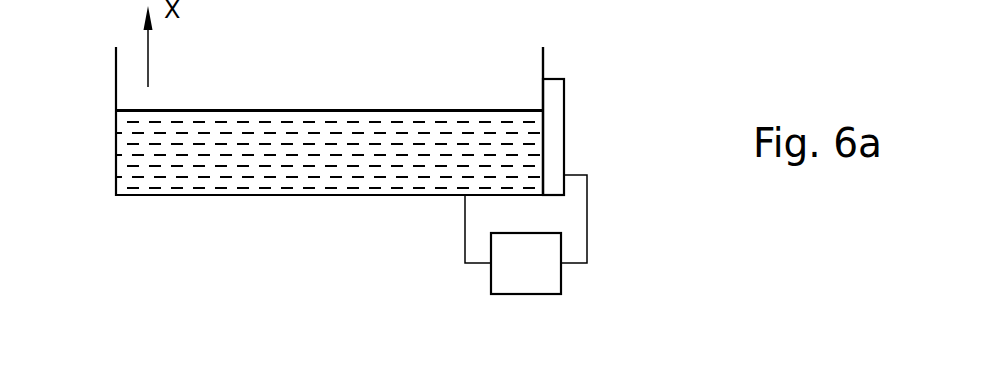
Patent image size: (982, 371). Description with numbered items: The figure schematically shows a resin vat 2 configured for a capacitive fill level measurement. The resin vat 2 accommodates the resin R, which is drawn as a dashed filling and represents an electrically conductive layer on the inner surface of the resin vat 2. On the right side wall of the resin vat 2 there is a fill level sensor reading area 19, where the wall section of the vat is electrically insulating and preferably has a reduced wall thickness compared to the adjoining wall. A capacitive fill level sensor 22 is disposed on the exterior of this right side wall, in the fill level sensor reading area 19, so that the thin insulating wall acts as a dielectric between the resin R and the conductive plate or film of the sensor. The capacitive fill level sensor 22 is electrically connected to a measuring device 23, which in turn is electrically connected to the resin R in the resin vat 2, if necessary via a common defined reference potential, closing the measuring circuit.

The resin vat 2 is at (116, 80).
The resin R is at (162, 159).
The fill level sensor reading area 19 is at (479, 100).
The capacitive fill level sensor 22 is at (550, 100).
The measuring device 23 is at (523, 268).